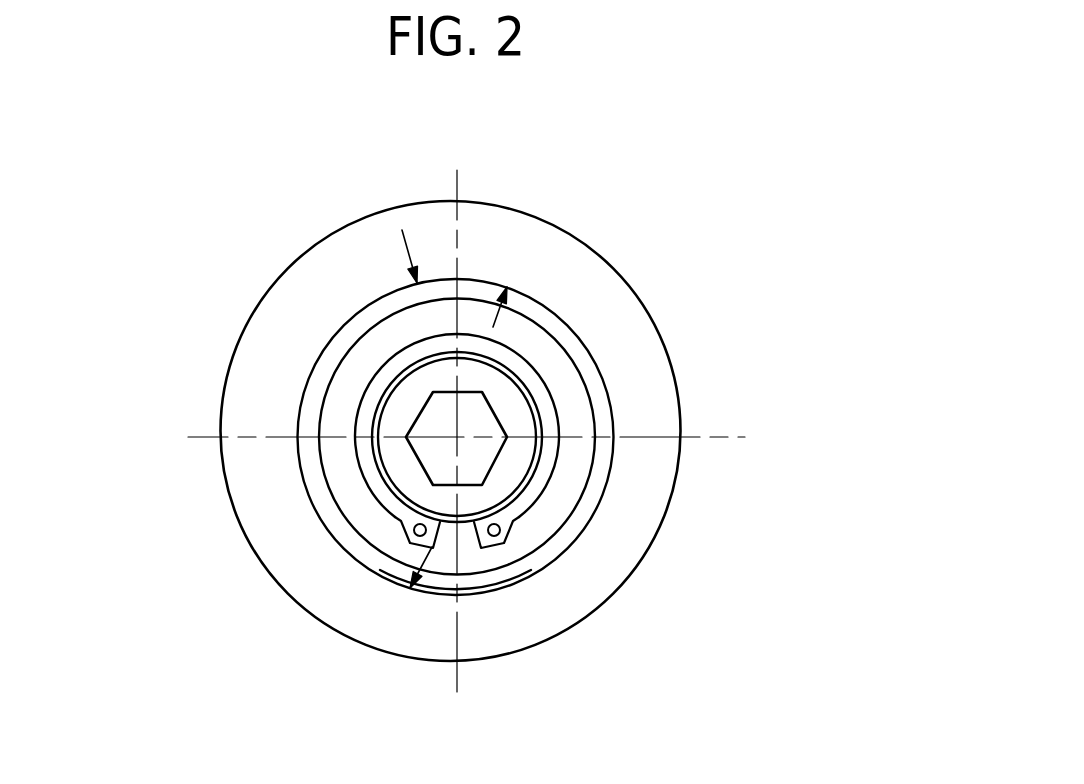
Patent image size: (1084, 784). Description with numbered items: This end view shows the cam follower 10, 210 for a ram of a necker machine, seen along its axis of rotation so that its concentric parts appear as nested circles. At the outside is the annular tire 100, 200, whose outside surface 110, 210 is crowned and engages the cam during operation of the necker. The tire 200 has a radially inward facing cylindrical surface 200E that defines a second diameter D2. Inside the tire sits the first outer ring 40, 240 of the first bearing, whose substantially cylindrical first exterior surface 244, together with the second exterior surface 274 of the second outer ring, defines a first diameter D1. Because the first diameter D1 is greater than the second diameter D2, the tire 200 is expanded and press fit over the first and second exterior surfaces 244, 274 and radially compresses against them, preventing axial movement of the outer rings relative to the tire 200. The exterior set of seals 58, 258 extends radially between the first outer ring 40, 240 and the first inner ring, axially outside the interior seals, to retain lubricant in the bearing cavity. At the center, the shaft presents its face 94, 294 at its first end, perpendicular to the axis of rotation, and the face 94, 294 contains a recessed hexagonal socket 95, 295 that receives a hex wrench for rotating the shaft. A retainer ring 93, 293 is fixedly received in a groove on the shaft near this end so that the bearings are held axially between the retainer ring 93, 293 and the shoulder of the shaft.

The cam follower 10 is at (478, 403).
The cam follower 210 is at (343, 212).
The first outer ring 40 is at (382, 416).
The first outer ring 240 is at (343, 343).
The exterior set of seals 58 is at (348, 447).
The exterior set of seals 258 is at (347, 383).
The retainer ring 93 is at (543, 376).
The retainer ring 293 is at (530, 373).
The face 94 is at (334, 437).
The face 294 is at (397, 422).
The recessed hexagonal socket 95 is at (320, 465).
The recessed hexagonal socket 295 is at (423, 448).
The tire 100 is at (522, 432).
The tire 200 is at (660, 408).
The outside surface 110 is at (658, 328).
The radially inward facing surface 200E is at (579, 538).
The first exterior surface 244 is at (550, 616).
The second exterior surface 274 is at (500, 595).
The first diameter D1 is at (512, 300).
The second diameter D2 is at (402, 230).